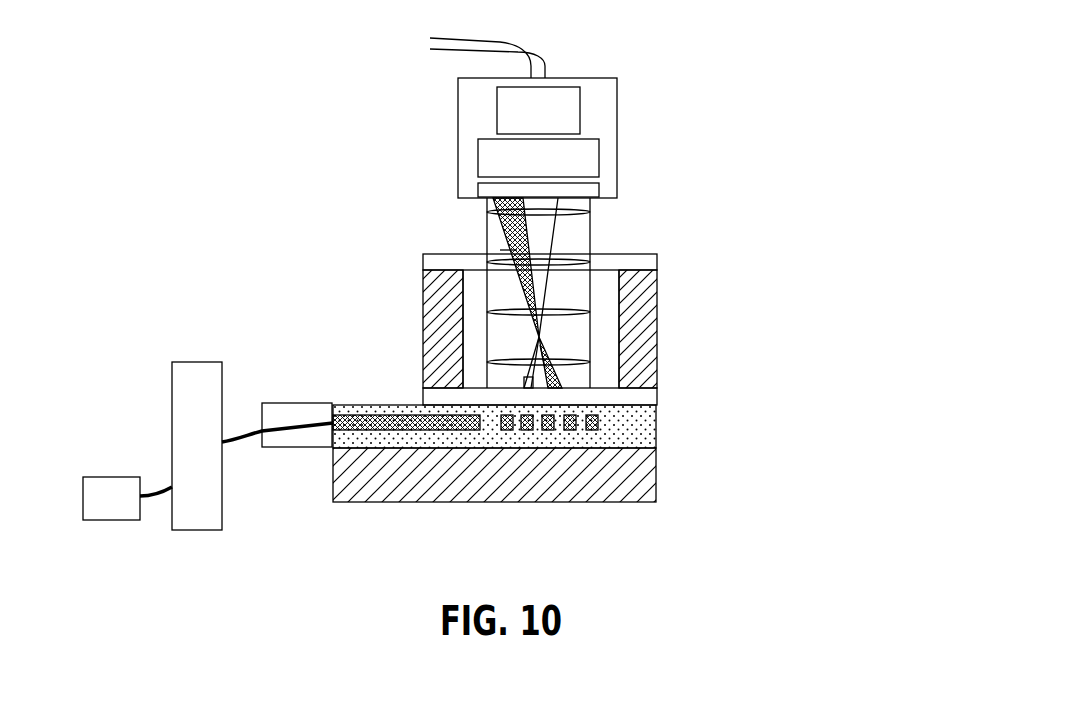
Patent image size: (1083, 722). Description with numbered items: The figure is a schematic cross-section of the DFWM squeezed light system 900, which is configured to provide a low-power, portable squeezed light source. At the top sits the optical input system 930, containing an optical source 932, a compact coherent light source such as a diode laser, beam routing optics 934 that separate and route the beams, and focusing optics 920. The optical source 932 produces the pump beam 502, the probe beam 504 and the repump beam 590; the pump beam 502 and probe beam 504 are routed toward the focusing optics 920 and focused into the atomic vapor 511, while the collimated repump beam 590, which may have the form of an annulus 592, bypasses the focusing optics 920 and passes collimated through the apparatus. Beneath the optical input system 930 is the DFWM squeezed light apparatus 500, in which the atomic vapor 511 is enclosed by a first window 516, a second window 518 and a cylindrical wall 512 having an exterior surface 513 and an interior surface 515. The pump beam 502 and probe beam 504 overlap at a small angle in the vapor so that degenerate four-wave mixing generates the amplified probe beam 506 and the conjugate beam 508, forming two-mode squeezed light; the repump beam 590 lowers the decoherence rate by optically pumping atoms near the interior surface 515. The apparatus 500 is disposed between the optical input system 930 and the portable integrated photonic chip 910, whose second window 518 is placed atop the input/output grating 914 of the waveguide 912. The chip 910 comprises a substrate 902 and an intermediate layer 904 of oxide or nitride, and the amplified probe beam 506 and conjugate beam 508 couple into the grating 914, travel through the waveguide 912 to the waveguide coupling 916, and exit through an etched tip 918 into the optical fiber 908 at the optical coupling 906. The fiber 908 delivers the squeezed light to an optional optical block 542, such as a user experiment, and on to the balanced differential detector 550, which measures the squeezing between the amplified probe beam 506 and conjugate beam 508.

The DFWM squeezed light system 900 is at (848, 41).
The optical input system 930 is at (510, 116).
The optical source 932 is at (497, 100).
The beam routing optics 934 is at (478, 150).
The focusing optics 920 is at (600, 190).
The repump beam 590 is at (590, 212).
The annulus 592 is at (556, 212).
The DFWM squeezed light apparatus 500 is at (561, 316).
The first window 516 is at (656, 262).
The exterior surface 513 is at (421, 308).
The cylindrical wall 512 is at (656, 325).
The interior surface 515 is at (458, 372).
The second window 518 is at (614, 422).
The pump beam 502 is at (544, 280).
The probe beam 504 is at (524, 280).
The amplified probe beam 506 is at (545, 366).
The conjugate beam 508 is at (524, 377).
The atomic vapor 511 is at (533, 329).
The portable integrated photonic chip 910 is at (545, 471).
The waveguide coupling 916 is at (390, 430).
The input/output grating 914 is at (565, 430).
The waveguide 912 is at (455, 430).
The intermediate layer 904 is at (656, 438).
The substrate 902 is at (656, 490).
The optical coupling 906 is at (296, 403).
The optical fiber 908 is at (278, 436).
The etched tip 918 is at (327, 434).
The optical block 542 is at (195, 530).
The balanced differential detector 550 is at (106, 466).